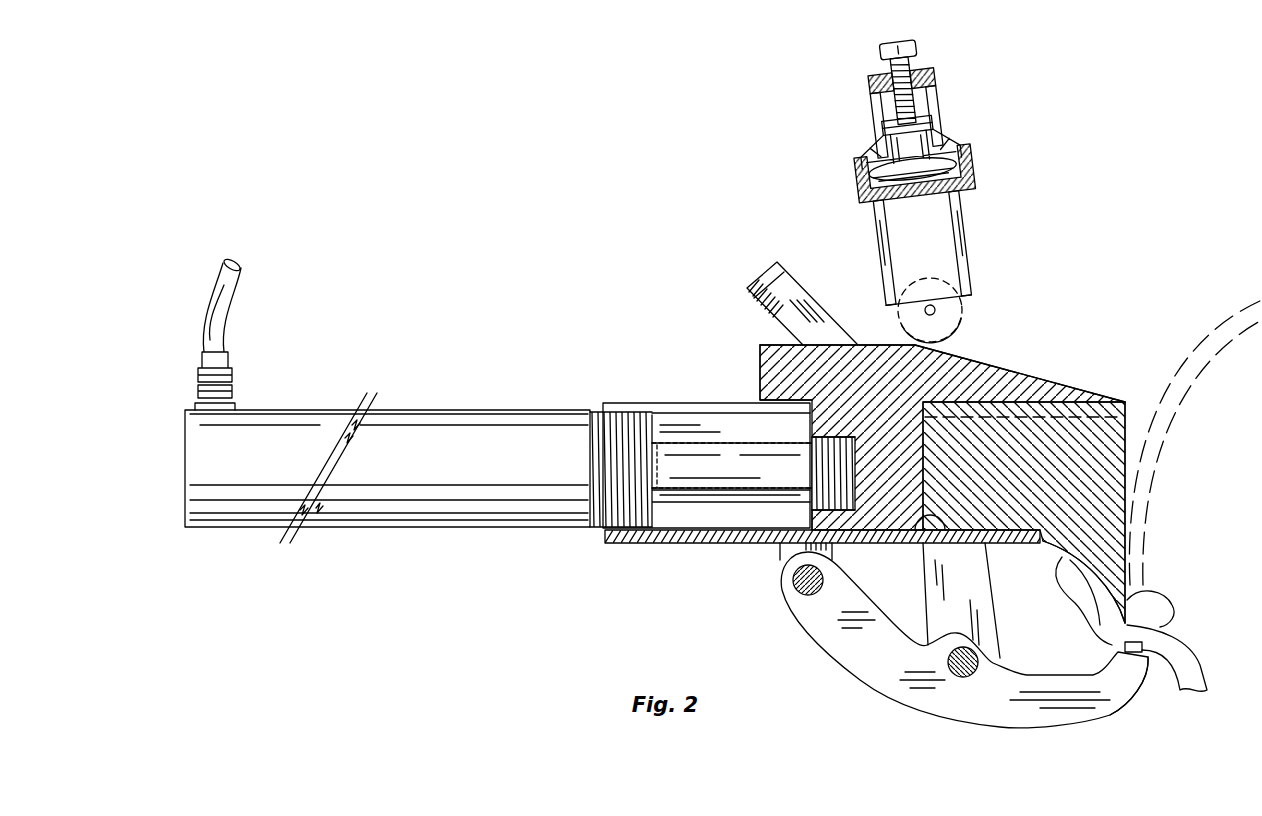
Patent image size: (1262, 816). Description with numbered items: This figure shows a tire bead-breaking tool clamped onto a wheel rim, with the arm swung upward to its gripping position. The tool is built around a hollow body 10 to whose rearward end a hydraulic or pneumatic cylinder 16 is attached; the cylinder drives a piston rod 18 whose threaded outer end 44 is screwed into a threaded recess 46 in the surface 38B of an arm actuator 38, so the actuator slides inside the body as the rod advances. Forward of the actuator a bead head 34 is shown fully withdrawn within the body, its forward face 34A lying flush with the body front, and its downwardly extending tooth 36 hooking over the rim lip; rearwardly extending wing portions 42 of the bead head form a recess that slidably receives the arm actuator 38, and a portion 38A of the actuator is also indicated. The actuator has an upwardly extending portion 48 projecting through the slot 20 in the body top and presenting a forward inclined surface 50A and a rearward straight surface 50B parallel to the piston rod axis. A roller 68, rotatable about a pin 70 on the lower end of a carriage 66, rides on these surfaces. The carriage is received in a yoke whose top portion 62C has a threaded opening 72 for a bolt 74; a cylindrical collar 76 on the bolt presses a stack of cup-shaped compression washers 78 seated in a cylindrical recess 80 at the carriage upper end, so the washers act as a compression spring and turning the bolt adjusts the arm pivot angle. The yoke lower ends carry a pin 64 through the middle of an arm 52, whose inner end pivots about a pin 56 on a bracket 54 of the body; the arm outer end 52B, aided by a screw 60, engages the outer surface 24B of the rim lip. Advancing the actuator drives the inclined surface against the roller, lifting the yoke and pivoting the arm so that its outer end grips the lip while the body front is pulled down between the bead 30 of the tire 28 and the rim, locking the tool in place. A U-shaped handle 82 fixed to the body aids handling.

The body 10 is at (716, 538).
The hydraulic or pneumatic cylinder 16 is at (468, 448).
The piston rod 18 is at (684, 484).
The slot 20 is at (705, 408).
The outer surface of rim lip 24B is at (1085, 602).
The tire 28 is at (1185, 347).
The bead 30 is at (1192, 626).
The bead head 34 is at (1080, 447).
The forward face of bead head 34A is at (1128, 430).
The tooth 36 is at (1112, 594).
The arm actuator 38 is at (880, 445).
The arm actuator portion 38A is at (925, 544).
The arm actuator surface 38B is at (815, 520).
The wing portions 42 is at (683, 432).
The threaded outer end 44 is at (820, 472).
The threaded recess 46 is at (818, 446).
The upwardly extending integral portion 48 is at (830, 380).
The forward inclined portion 50A is at (1001, 377).
The rearward straight surface 50B is at (763, 345).
The arm 52 is at (1002, 715).
The arm outer end 52B is at (1120, 692).
The bracket 54 is at (782, 555).
The pin 56 is at (800, 592).
The screw 60 is at (1125, 646).
The yoke top portion 62C is at (941, 78).
The pin 64 is at (947, 661).
The carriage 66 is at (918, 226).
The roller 68 is at (957, 332).
The pin 70 is at (937, 310).
The threaded opening 72 is at (906, 66).
The bolt 74 is at (882, 50).
The cylindrical collar 76 is at (940, 137).
The cup-shaped compression washers 78 is at (870, 148).
The cylindrical recess 80 is at (975, 186).
The handle 82 is at (776, 268).